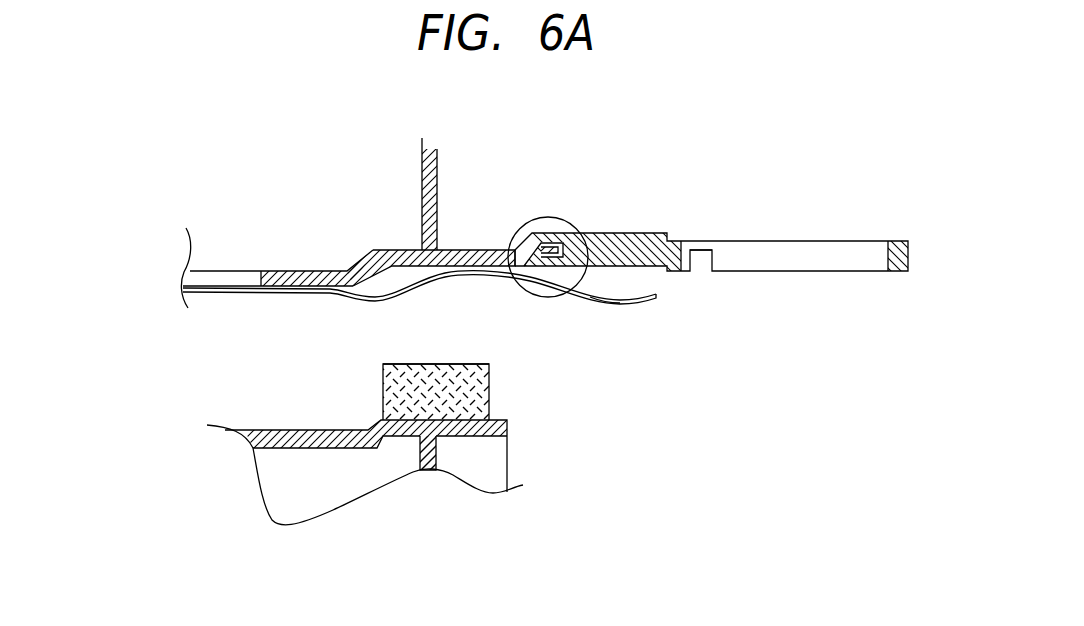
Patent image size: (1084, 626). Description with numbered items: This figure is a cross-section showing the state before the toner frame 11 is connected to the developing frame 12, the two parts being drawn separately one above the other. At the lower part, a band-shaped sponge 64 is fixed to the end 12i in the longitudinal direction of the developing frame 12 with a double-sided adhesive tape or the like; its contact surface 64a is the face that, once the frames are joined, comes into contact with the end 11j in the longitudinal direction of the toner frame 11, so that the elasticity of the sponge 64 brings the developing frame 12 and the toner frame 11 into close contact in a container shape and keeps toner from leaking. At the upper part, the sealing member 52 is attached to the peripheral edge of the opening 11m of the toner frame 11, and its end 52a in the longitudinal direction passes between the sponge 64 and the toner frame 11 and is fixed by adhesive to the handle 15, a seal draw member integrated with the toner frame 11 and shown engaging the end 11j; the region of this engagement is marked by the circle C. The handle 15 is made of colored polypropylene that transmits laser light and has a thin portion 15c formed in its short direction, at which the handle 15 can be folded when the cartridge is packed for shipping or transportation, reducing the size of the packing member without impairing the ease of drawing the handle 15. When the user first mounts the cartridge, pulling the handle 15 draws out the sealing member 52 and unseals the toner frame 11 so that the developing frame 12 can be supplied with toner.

The toner frame 11 is at (384, 145).
The opening 11m is at (232, 271).
The end of the toner frame 11j is at (478, 250).
The handle 15 is at (778, 248).
The thin portion 15c is at (700, 252).
The engaging portion (detail circle) C is at (570, 217).
The sealing member 52 is at (397, 288).
The end of the sealing member 52a is at (590, 297).
The developing frame 12 is at (318, 446).
The end of the developing frame 12i is at (472, 434).
The sponge 64 is at (478, 393).
The contact surface 64a is at (452, 365).